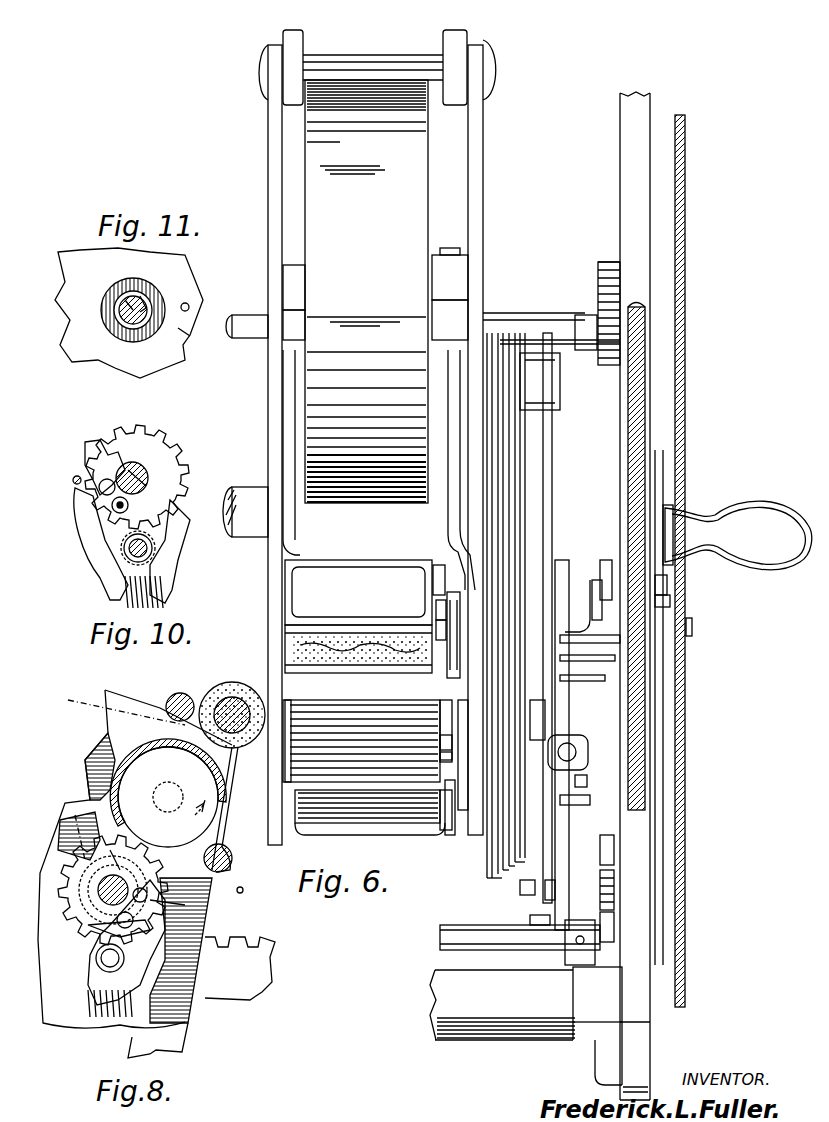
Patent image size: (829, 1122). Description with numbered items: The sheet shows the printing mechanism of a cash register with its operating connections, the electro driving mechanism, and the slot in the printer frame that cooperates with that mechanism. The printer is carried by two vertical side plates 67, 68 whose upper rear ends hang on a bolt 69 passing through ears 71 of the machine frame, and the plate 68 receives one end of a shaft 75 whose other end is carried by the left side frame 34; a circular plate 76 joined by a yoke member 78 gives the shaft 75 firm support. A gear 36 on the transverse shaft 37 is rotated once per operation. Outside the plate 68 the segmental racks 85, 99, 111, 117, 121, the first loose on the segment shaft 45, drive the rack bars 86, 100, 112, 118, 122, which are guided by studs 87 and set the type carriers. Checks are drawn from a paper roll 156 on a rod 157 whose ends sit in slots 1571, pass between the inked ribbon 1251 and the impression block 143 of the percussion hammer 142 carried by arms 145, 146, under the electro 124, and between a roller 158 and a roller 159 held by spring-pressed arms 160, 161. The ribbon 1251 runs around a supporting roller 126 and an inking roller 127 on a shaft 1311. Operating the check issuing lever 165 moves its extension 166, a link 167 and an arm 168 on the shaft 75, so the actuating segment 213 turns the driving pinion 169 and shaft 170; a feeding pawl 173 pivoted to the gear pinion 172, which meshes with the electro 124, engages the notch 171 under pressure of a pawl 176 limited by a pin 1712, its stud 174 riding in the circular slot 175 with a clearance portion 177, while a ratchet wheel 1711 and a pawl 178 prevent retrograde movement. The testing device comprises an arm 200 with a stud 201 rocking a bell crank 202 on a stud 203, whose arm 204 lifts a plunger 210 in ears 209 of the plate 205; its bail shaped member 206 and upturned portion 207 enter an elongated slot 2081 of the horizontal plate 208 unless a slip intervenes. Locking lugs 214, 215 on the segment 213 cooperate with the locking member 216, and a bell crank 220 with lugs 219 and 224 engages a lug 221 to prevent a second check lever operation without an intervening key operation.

In FIG. 6, the side frames 34 is at (698, 440).
In FIG. 6, the gear 36 is at (604, 293).
In FIG. 6, the transverse shaft 37 is at (528, 330).
In FIG. 6, the segment shaft 45 is at (255, 522).
In FIG. 6, the vertical side plate 67 is at (270, 216).
In FIG. 6, the vertical side plate 68 is at (478, 218).
In FIG. 11, the vertical side plate 68 is at (170, 366).
In FIG. 8, the vertical side plate 68 is at (181, 950).
In FIG. 6, the bolt 69 is at (372, 60).
In FIG. 6, the ears 71 is at (297, 50).
In FIG. 6, the shaft 75 is at (615, 845).
In FIG. 6, the circular plate 76 is at (615, 885).
In FIG. 6, the yoke member 78 is at (612, 920).
In FIG. 6, the segmental rack 85 is at (532, 437).
In FIG. 6, the horizontal rack 86 is at (516, 895).
In FIG. 6, the guide studs 87 is at (548, 380).
In FIG. 6, the segmental rack 99 is at (520, 445).
In FIG. 6, the rack bar 100 is at (511, 886).
In FIG. 6, the segmental rack 111 is at (510, 456).
In FIG. 6, the rack bar 112 is at (506, 876).
In FIG. 6, the segmental rack 117 is at (505, 467).
In FIG. 6, the rack bar 118 is at (502, 866).
In FIG. 6, the segmental rack 121 is at (497, 477).
In FIG. 6, the rack bar 122 is at (497, 856).
In FIG. 8, the electro 124 is at (168, 793).
In FIG. 8, the supporting roller 126 is at (180, 692).
In FIG. 8, the inking roller 127 is at (225, 690).
In FIG. 6, the percussion hammer 142 is at (380, 628).
In FIG. 6, the impression block 143 is at (378, 672).
In FIG. 6, the hammer arm 145 is at (296, 547).
In FIG. 6, the hammer arm 146 is at (450, 548).
In FIG. 6, the paper roll 156 is at (366, 291).
In FIG. 6, the rod 157 is at (283, 290).
In FIG. 6, the roller 158 is at (362, 741).
In FIG. 6, the roller 159 is at (367, 806).
In FIG. 6, the spring-pressed arm 160 is at (326, 828).
In FIG. 6, the spring-pressed arm 161 is at (445, 835).
In FIG. 6, the check issuing lever 165 is at (697, 530).
In FIG. 6, the forward extension 166 is at (670, 602).
In FIG. 6, the link 167 is at (666, 746).
In FIG. 6, the arm 168 is at (662, 903).
In FIG. 6, the driving pinion 169 is at (548, 705).
In FIG. 6, the shaft 170 is at (290, 736).
In FIG. 11, the shaft 170 is at (125, 300).
In FIG. 10, the shaft 170 is at (122, 466).
In FIG. 8, the shaft 170 is at (100, 905).
In FIG. 11, the notch 171 is at (145, 325).
In FIG. 10, the notch 171 is at (150, 486).
In FIG. 8, the notch 171 is at (110, 850).
In FIG. 6, the gear pinion 172 is at (440, 724).
In FIG. 10, the gear pinion 172 is at (178, 450).
In FIG. 8, the gear pinion 172 is at (70, 915).
In FIG. 6, the feeding pawl 173 is at (427, 810).
In FIG. 10, the feeding pawl 173 is at (85, 462).
In FIG. 8, the feeding pawl 173 is at (121, 940).
In FIG. 10, the stud 174 is at (99, 483).
In FIG. 8, the stud 174 is at (148, 895).
In FIG. 11, the circular slot 175 is at (118, 330).
In FIG. 8, the circular slot 175 is at (172, 806).
In FIG. 6, the pawl 176 is at (467, 812).
In FIG. 10, the pawl 176 is at (90, 528).
In FIG. 8, the pawl 176 is at (200, 925).
In FIG. 11, the clearance portion 177 is at (185, 333).
In FIG. 8, the clearance portion 177 is at (185, 905).
In FIG. 6, the spring-pressed pawl 178 is at (440, 757).
In FIG. 10, the spring-pressed pawl 178 is at (162, 533).
In FIG. 8, the spring-pressed pawl 178 is at (98, 968).
In FIG. 6, the arm 200 is at (668, 582).
In FIG. 6, the stud 201 is at (610, 570).
In FIG. 6, the bell crank 202 is at (628, 642).
In FIG. 6, the stud 203 is at (690, 627).
In FIG. 6, the forwardly extending arm 204 is at (572, 722).
In FIG. 6, the testing device plate 205 is at (551, 490).
In FIG. 6, the bail shaped member 206 is at (436, 628).
In FIG. 6, the upturned portion 207 is at (436, 606).
In FIG. 6, the horizontal plate 208 is at (447, 700).
In FIG. 6, the ears 209 is at (585, 752).
In FIG. 6, the plunger 210 is at (590, 780).
In FIG. 6, the actuating segment 213 is at (525, 892).
In FIG. 8, the actuating segment 213 is at (245, 1000).
In FIG. 6, the locking lug 214 is at (552, 890).
In FIG. 6, the locking lug 215 is at (532, 920).
In FIG. 6, the locking member 216 is at (583, 806).
In FIG. 6, the lug 219 is at (598, 605).
In FIG. 6, the bell crank 220 is at (618, 662).
In FIG. 6, the lug 221 is at (608, 682).
In FIG. 6, the lug 224 is at (433, 575).
In FIG. 8, the endless inked ribbon 1251 is at (122, 701).
In FIG. 8, the shaft 1311 is at (240, 809).
In FIG. 6, the slots 1571 is at (470, 272).
In FIG. 6, the ratchet wheel 1711 is at (440, 742).
In FIG. 8, the ratchet wheel 1711 is at (75, 815).
In FIG. 11, the pin 1712 is at (183, 303).
In FIG. 10, the pin 1712 is at (73, 482).
In FIG. 8, the pin 1712 is at (242, 890).
In FIG. 6, the elongated slot 2081 is at (394, 668).